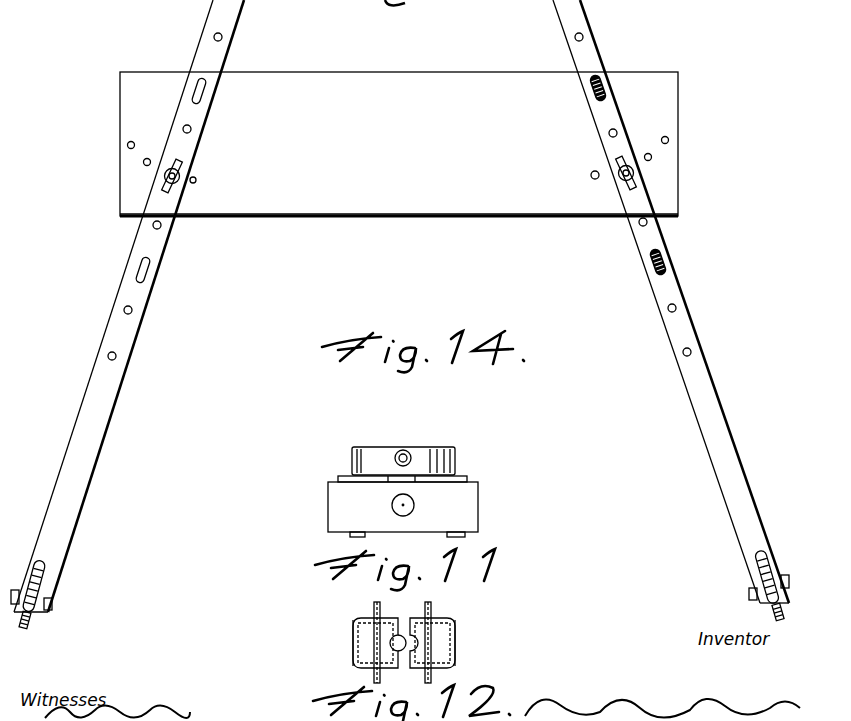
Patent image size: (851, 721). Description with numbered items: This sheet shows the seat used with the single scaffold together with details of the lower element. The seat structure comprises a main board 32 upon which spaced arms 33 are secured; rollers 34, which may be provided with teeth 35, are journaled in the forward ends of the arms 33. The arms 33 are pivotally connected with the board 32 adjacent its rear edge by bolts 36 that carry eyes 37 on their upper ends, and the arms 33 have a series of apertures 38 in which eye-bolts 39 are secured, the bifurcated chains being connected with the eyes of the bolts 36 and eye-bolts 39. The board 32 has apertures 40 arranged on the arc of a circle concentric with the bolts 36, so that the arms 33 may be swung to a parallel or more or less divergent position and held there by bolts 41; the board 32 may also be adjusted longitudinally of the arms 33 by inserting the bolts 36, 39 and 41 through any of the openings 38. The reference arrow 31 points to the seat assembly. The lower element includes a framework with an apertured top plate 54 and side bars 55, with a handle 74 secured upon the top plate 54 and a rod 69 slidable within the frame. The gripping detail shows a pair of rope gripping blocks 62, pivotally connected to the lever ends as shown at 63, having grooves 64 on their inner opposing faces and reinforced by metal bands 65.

In FIG. 14, the shelf support 31 is at (446, 226).
In FIG. 14, the main board 32 is at (399, 144).
In FIG. 14, the spaced arms 33 is at (97, 400).
In FIG. 14, the rollers 34 is at (45, 580).
In FIG. 14, the teeth 35 is at (27, 628).
In FIG. 14, the bolts 36 is at (208, 95).
In FIG. 14, the eyes 37 is at (200, 94).
In FIG. 14, the apertures 38 is at (222, 37).
In FIG. 14, the eye-bolts 39 is at (148, 272).
In FIG. 14, the apertures 40 is at (148, 158).
In FIG. 14, the bolts 41 is at (178, 188).
In FIG. 11, the apertured top plate 54 is at (467, 505).
In FIG. 11, the side bars 55 is at (345, 477).
In FIG. 12, the rope gripping blocks 62 is at (365, 640).
In FIG. 12, the pivotal connection 63 is at (382, 608).
In FIG. 12, the grooves 64 is at (400, 643).
In FIG. 12, the bands 65 is at (358, 650).
In FIG. 11, the rod 69 is at (405, 451).
In FIG. 11, the handle 74 is at (455, 456).